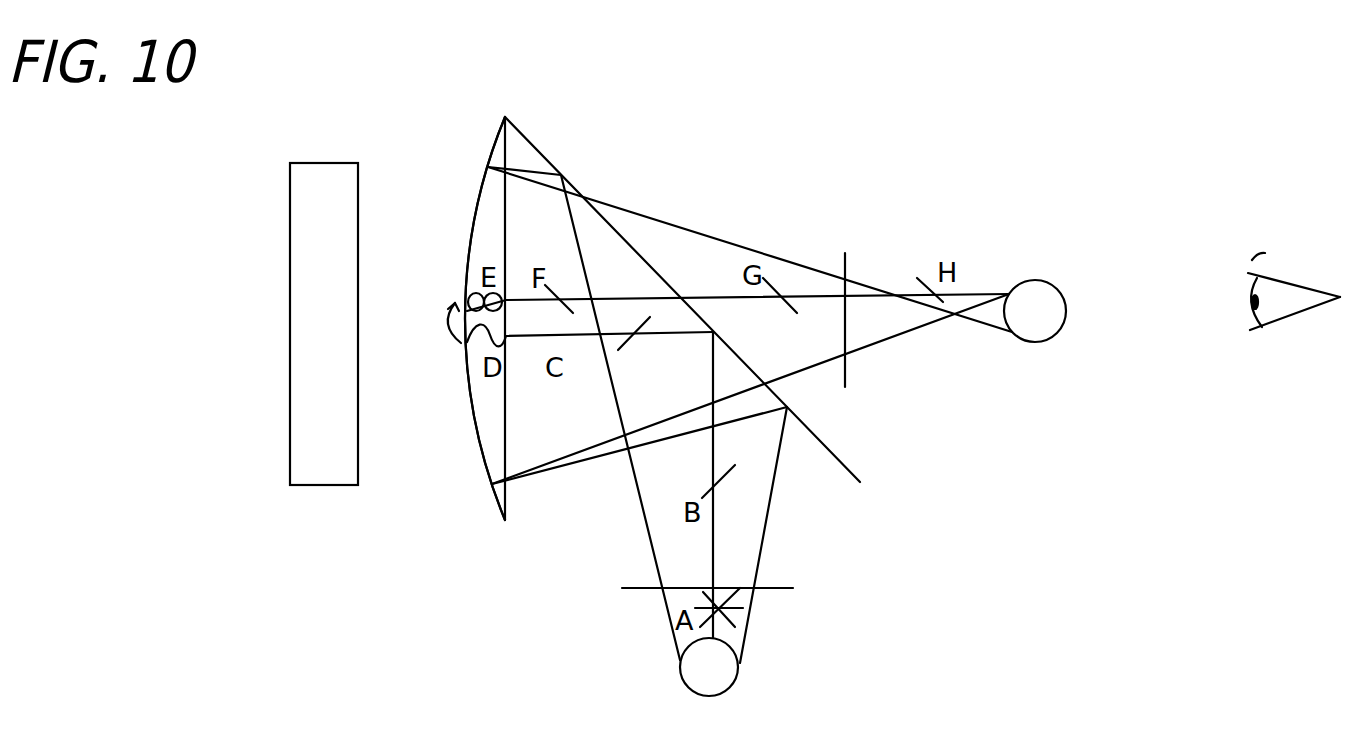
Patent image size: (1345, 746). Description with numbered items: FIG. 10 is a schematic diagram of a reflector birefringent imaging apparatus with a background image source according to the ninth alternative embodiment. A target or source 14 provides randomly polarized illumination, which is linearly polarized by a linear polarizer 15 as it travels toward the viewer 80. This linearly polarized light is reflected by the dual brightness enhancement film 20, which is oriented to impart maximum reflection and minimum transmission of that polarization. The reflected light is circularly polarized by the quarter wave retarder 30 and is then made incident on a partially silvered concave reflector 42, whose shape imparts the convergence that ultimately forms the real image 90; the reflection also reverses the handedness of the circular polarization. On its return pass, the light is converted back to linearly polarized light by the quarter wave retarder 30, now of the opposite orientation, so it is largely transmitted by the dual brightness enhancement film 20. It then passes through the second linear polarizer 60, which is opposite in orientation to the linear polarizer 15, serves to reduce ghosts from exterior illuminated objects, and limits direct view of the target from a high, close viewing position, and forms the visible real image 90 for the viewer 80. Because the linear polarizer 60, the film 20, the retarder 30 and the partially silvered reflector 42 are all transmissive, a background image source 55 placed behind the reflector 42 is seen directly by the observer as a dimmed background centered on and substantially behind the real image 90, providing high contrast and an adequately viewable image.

The target or source 14 is at (697, 678).
The linear polarizer 15 is at (783, 590).
The dual brightness enhancement film 20 is at (566, 165).
The quarter wave retarder 30 is at (478, 252).
The partially silvered concave reflector 42 is at (507, 522).
The background image source 55 is at (347, 473).
The second linear polarizer 60 is at (845, 256).
The viewer 80 is at (1297, 300).
The real image 90 is at (1053, 303).